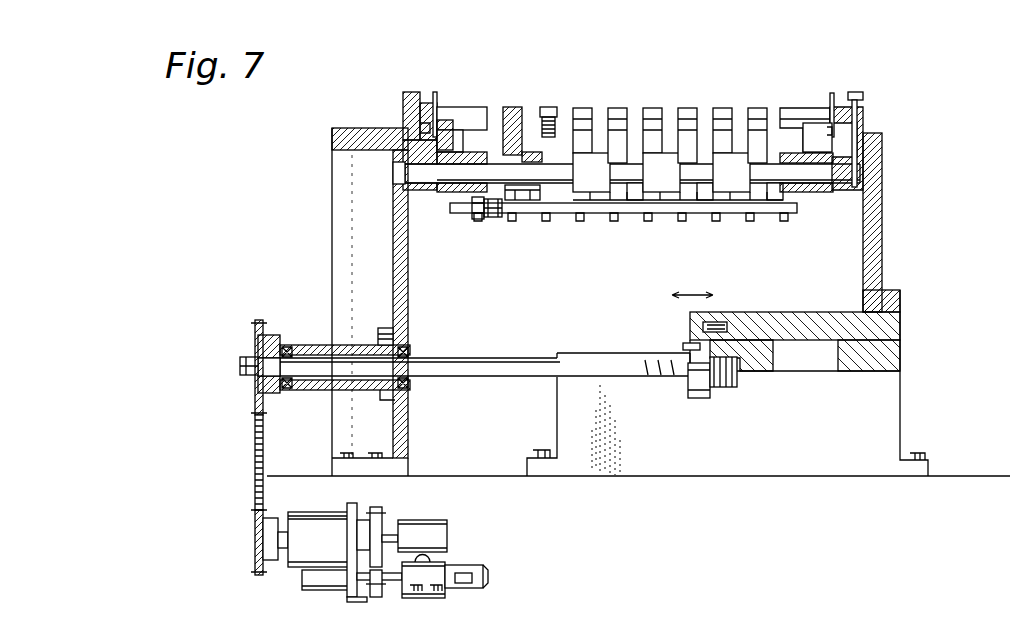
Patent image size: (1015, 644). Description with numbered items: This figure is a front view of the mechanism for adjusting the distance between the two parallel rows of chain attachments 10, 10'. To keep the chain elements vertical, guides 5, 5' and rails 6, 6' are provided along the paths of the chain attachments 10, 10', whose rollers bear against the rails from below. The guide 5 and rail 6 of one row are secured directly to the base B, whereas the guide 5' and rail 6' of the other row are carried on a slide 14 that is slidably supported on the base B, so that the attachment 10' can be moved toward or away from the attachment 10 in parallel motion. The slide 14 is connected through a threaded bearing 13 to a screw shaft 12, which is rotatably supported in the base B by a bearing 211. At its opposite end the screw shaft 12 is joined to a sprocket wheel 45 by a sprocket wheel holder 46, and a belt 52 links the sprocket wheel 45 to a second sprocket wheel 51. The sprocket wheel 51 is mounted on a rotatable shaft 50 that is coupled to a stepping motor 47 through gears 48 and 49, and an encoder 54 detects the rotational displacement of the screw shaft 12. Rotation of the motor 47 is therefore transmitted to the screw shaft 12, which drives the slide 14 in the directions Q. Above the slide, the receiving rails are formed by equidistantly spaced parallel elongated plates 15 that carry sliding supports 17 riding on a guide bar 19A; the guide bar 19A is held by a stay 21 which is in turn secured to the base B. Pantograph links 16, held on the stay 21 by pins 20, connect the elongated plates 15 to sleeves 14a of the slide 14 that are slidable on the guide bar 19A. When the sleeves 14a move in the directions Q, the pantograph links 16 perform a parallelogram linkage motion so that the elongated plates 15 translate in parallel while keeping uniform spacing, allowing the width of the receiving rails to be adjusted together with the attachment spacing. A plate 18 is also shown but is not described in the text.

The rail 6 is at (403, 119).
The chain attachment 10 is at (440, 94).
The guide 5 is at (462, 100).
The sliding support 17 is at (520, 127).
The elongated plate 15 is at (651, 117).
The guide 5' is at (809, 100).
The chain attachment 10' is at (845, 92).
The rail 6' is at (866, 119).
The stay 21 is at (441, 188).
The guide bar 19A is at (458, 176).
The pin 20 is at (473, 198).
The pantograph link 16 is at (486, 200).
The mounting plate 18 is at (541, 200).
The sleeve 14a is at (817, 190).
The slide 14 is at (763, 317).
The screw shaft 12 is at (617, 365).
The threaded bearing 13 is at (688, 393).
The base B is at (890, 420).
The direction Q is at (692, 284).
The bearing 211 is at (353, 345).
The sprocket wheel 45 is at (260, 322).
The sprocket wheel holder 46 is at (275, 340).
The rotatable shaft 50 is at (358, 530).
The belt 52 is at (255, 470).
The sprocket wheel 51 is at (257, 532).
The gear 49 is at (377, 525).
The encoder 54 is at (442, 530).
The gear 48 is at (377, 588).
The stepping motor 47 is at (467, 578).